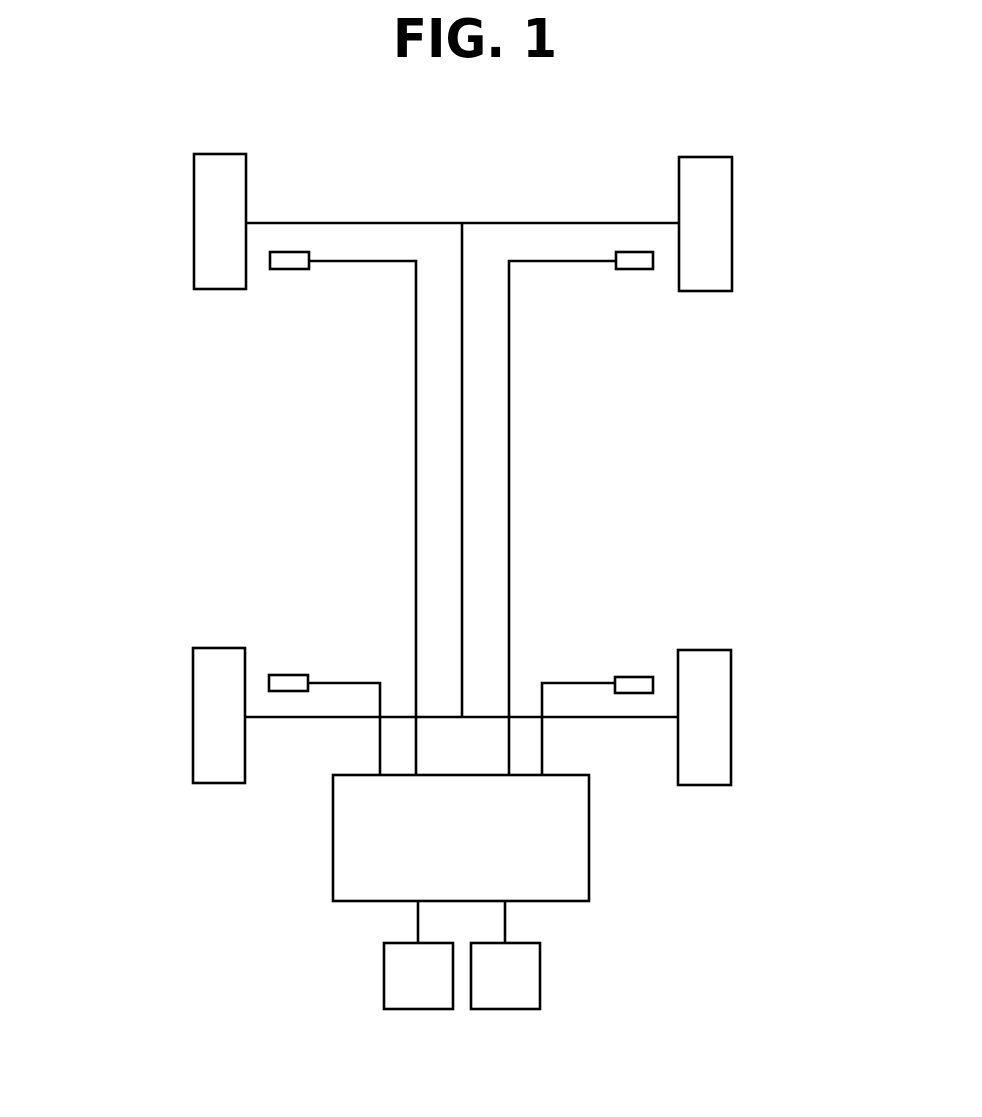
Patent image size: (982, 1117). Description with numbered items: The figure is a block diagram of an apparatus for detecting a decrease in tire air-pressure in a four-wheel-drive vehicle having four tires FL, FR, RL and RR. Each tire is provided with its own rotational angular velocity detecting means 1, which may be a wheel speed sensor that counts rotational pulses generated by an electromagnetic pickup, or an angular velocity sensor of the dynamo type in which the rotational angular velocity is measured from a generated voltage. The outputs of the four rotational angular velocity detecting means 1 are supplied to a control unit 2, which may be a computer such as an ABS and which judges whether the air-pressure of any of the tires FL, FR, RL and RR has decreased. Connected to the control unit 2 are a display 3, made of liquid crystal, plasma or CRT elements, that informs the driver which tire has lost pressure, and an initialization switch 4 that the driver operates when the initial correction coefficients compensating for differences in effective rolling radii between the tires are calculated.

The rotational angular velocity detecting means 1 is at (281, 262).
The control unit 2 is at (576, 882).
The display 3 is at (397, 965).
The initialization switch 4 is at (528, 969).
The front left tire FL is at (207, 193).
The front right tire FR is at (713, 200).
The rear left tire RL is at (207, 699).
The rear right tire RR is at (713, 704).